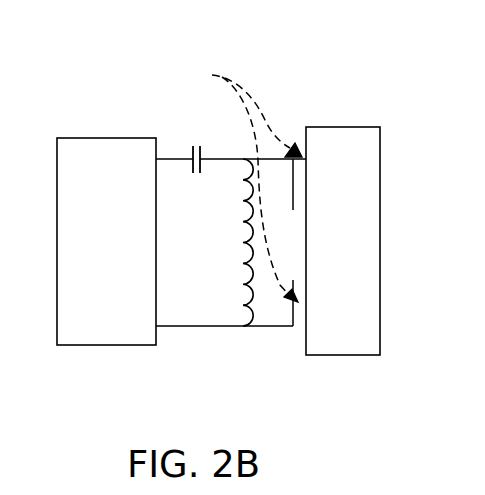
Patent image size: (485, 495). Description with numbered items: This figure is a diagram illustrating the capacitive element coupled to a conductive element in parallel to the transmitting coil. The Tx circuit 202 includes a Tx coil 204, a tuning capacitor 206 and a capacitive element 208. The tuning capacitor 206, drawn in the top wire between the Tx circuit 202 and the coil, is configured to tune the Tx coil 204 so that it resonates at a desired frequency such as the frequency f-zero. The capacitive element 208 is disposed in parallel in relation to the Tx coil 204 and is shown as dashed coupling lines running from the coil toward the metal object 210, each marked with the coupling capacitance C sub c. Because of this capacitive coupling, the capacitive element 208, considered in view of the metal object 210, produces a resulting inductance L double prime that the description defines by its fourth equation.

The Tx circuit 202 is at (97, 138).
The Tx coil 204 is at (243, 305).
The tuning capacitor 206 is at (192, 146).
The capacitive element 208 is at (238, 231).
The metal object 210 is at (333, 127).